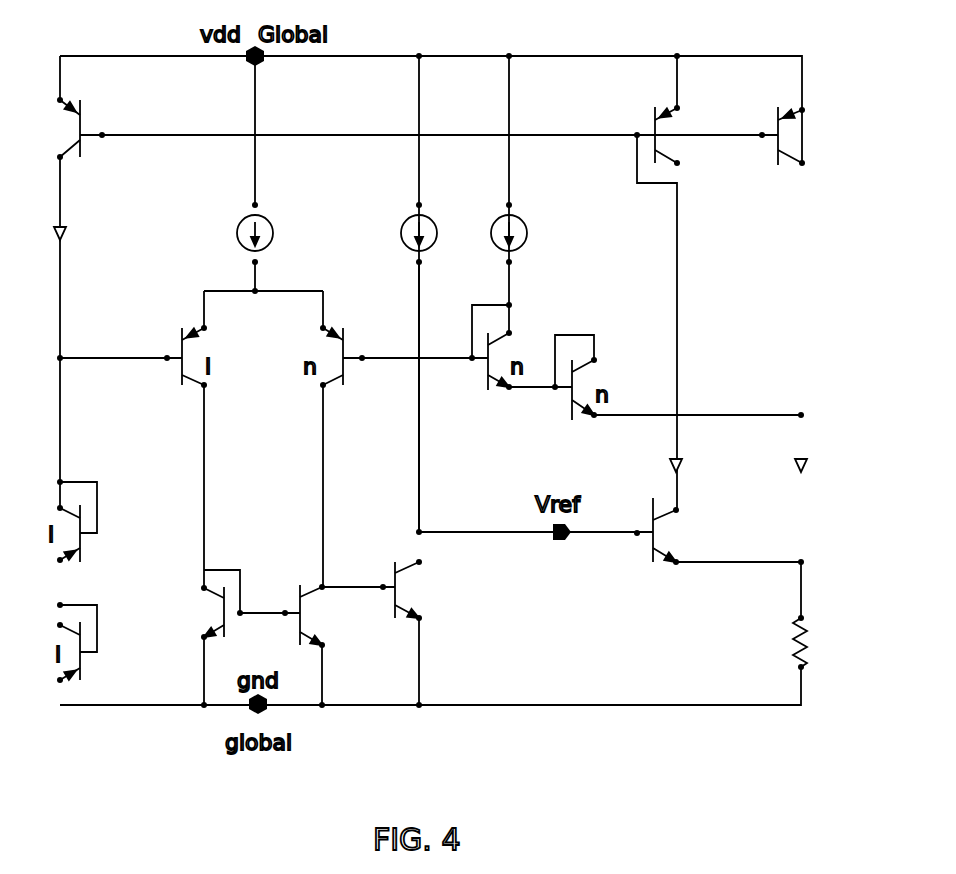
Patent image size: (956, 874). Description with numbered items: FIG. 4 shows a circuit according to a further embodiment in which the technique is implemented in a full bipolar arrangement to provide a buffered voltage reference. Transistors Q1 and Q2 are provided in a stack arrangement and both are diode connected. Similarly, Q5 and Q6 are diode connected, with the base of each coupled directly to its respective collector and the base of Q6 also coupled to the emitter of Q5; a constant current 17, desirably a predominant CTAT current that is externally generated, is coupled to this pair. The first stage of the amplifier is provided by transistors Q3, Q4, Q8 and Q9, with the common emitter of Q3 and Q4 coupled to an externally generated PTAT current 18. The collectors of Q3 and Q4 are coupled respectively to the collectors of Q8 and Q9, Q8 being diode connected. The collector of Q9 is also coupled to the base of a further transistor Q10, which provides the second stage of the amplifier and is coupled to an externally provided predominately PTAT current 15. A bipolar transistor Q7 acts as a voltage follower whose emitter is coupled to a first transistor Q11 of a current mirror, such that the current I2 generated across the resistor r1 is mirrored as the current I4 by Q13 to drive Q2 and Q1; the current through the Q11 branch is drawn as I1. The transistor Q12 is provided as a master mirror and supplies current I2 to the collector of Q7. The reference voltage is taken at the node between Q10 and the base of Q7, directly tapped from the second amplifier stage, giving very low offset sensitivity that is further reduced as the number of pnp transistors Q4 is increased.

The transistor Q13 is at (86, 118).
The master mirror transistor Q12 is at (646, 121).
The first transistor of current mirror Q11 is at (765, 131).
The transistor Q3 is at (186, 341).
The pnp bipolar transistor Q4 is at (346, 341).
The transistor Q2 is at (51, 522).
The transistor Q1 is at (54, 640).
The transistor Q5 is at (519, 342).
The transistor Q6 is at (604, 376).
The voltage follower transistor Q7 is at (656, 512).
The transistor Q8 is at (200, 612).
The transistor Q9 is at (325, 616).
The transistor Q10 is at (432, 590).
The PTAT current 18 is at (238, 233).
The PTAT current 15 is at (403, 233).
The CTAT current 17 is at (495, 233).
The mirrored current I4 is at (74, 247).
The current I2 is at (689, 462).
The current I1 is at (814, 470).
The resistor r1 is at (816, 642).